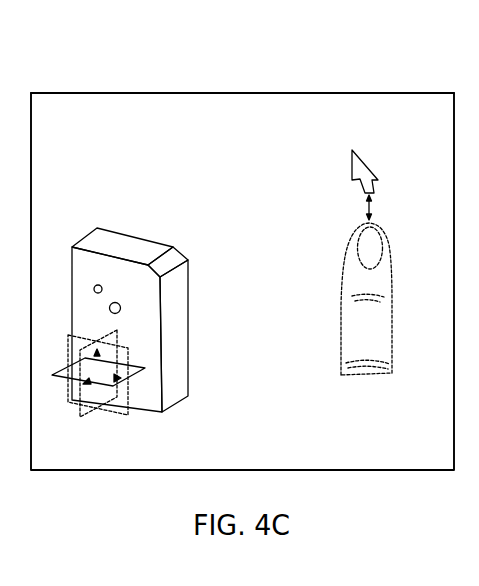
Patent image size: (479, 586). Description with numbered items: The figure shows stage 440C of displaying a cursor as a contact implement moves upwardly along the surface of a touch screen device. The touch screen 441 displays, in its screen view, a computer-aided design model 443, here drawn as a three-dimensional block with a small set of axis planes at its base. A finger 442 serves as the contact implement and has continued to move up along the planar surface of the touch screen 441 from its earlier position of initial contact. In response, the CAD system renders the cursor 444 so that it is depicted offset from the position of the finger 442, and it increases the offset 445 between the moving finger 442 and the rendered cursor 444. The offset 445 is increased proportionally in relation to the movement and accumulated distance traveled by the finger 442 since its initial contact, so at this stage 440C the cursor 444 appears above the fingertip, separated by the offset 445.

The stage 440C is at (92, 93).
The touch screen 441 is at (263, 102).
The finger 442 is at (338, 275).
The computer-aided design (CAD) model 443 is at (189, 291).
The cursor 444 is at (351, 151).
The offset 445 is at (366, 211).